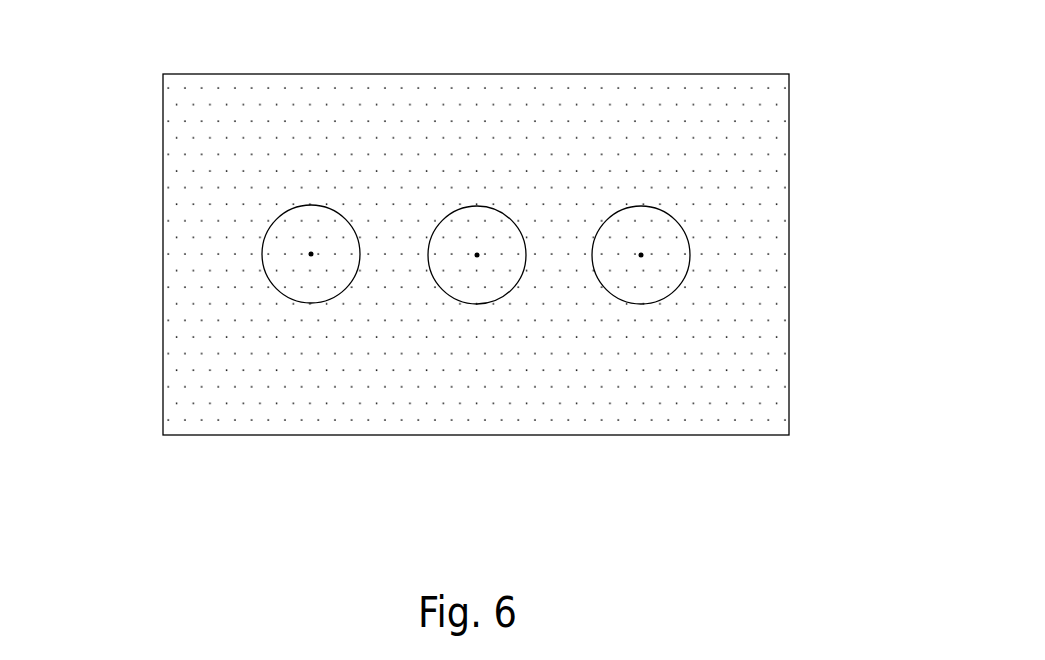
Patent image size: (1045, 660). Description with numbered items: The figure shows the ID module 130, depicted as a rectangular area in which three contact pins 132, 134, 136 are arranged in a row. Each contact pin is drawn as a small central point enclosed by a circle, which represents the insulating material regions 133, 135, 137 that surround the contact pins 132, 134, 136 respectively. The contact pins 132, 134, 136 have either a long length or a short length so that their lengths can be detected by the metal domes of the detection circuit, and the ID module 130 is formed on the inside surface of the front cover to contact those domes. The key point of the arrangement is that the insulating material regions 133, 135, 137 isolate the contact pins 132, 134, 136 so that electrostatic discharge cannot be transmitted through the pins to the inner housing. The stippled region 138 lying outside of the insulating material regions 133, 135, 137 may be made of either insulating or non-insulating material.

The ID module 130 is at (789, 125).
The contact pin 132 is at (311, 254).
The insulating material region 133 is at (314, 283).
The contact pin 134 is at (477, 255).
The insulating material region 135 is at (480, 283).
The contact pin 136 is at (641, 255).
The insulating material region 137 is at (644, 283).
The region outside of the insulating material regions 138 is at (185, 188).